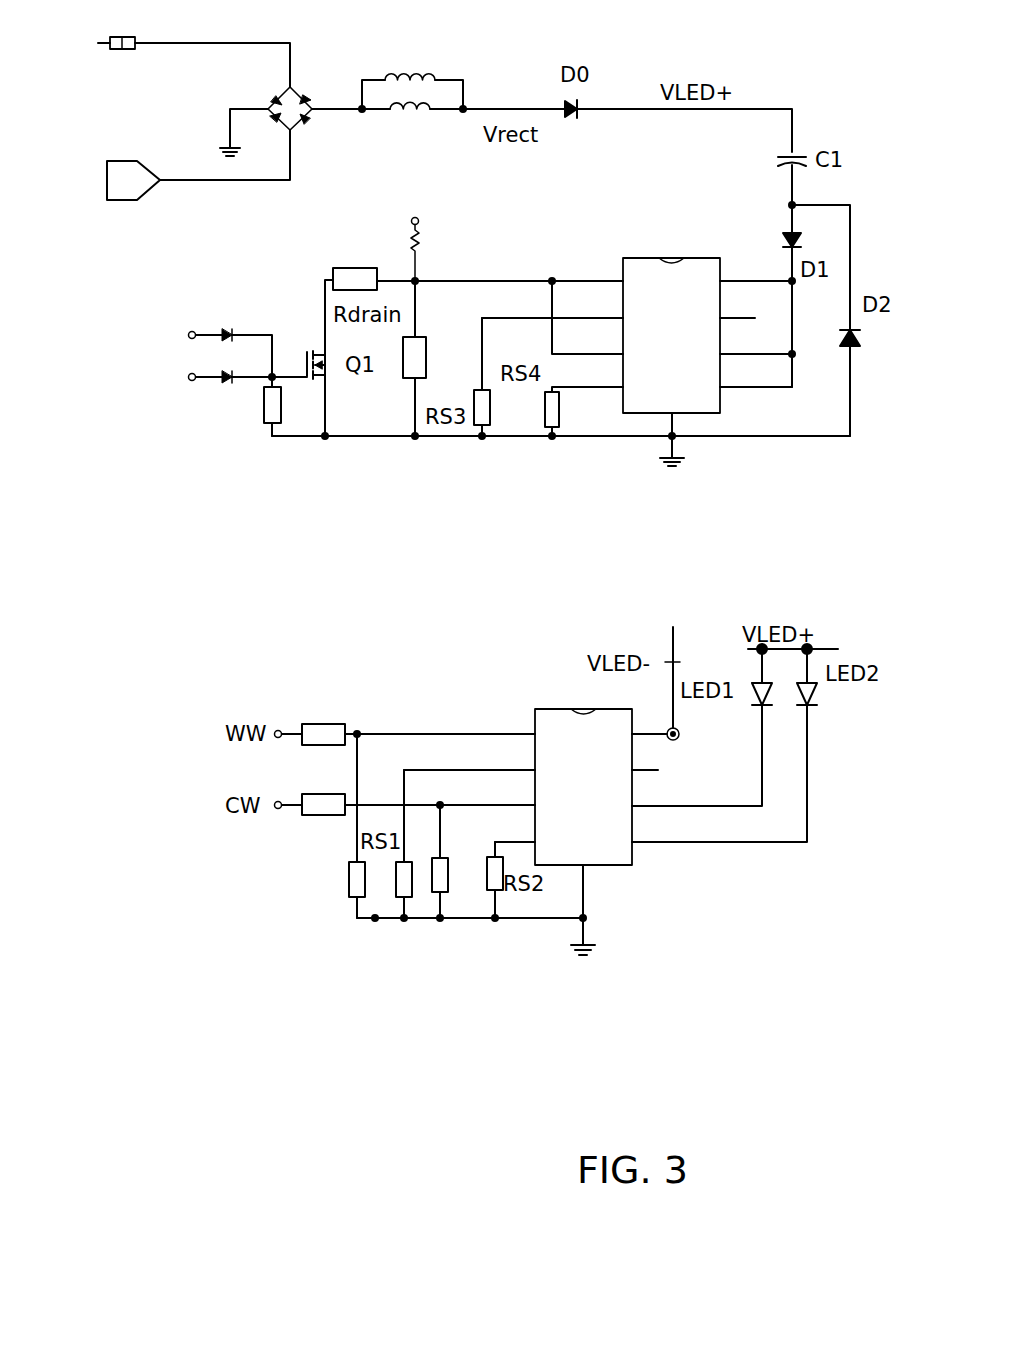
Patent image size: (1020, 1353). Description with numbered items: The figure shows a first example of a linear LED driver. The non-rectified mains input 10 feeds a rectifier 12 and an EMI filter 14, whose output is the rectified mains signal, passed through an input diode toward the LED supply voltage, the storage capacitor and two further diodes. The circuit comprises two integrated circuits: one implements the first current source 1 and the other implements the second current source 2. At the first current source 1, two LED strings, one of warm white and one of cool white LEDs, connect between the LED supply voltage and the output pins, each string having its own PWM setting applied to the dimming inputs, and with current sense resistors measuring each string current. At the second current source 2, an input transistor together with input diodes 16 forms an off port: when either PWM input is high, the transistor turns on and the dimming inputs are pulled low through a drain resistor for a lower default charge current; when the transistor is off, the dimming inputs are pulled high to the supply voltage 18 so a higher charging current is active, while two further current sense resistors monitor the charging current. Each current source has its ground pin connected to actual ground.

The non-rectified mains input 10 is at (80, 40).
The rectifier 12 is at (300, 82).
The EMI filter 14 is at (455, 63).
The input diodes 16 is at (235, 317).
The supply voltage 18 is at (410, 222).
The second current source 2 is at (626, 216).
The first current source 1 is at (546, 660).